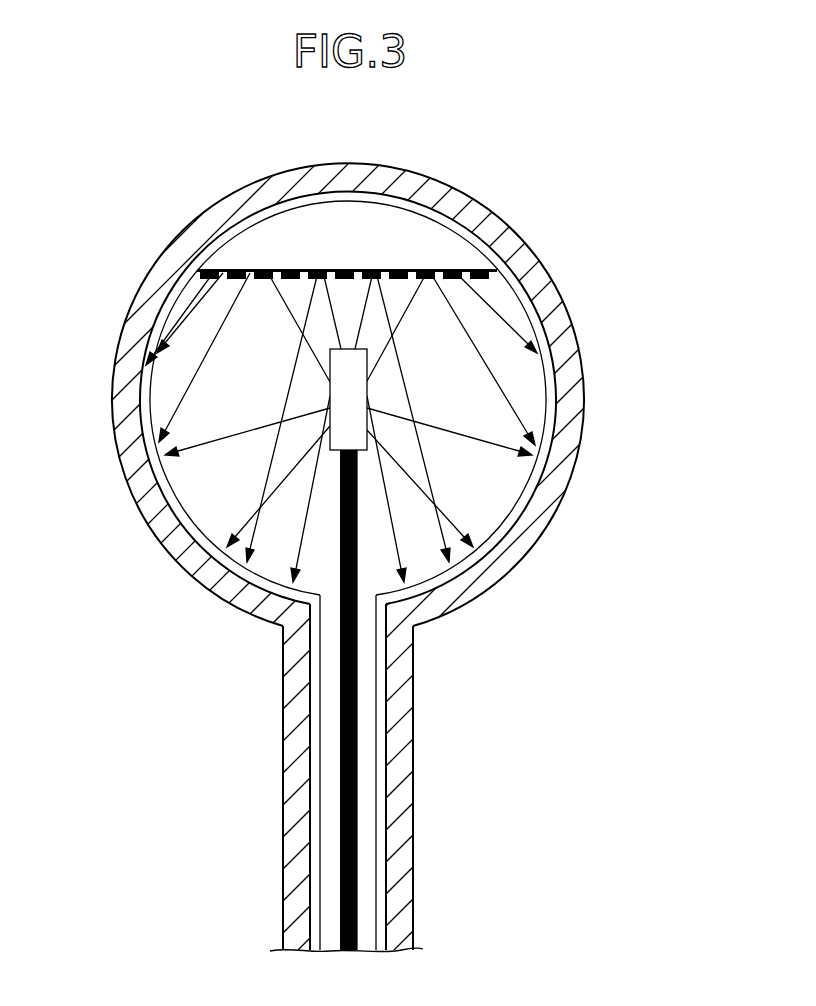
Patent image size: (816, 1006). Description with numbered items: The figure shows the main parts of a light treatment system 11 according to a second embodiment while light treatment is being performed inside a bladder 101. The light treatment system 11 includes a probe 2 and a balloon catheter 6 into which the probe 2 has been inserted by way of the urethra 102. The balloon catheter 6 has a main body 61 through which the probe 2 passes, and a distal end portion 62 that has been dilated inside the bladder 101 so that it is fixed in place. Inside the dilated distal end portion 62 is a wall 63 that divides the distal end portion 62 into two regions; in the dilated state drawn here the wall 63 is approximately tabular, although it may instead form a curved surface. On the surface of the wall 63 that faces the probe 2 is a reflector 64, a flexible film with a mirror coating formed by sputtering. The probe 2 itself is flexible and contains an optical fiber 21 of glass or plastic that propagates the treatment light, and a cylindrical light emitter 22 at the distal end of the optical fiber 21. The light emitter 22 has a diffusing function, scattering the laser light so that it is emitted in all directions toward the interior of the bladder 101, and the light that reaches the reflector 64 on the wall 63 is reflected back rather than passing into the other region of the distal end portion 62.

The probe 2 is at (370, 708).
The balloon catheter 6 is at (302, 575).
The light treatment system 11 is at (408, 503).
The optical fiber 21 is at (358, 678).
The light emitter 22 is at (330, 397).
The main body 61 is at (320, 717).
The distal end portion 62 is at (162, 482).
The wall 63 is at (253, 270).
The reflector 64 is at (358, 286).
The bladder 101 is at (565, 367).
The urethra 102 is at (414, 752).